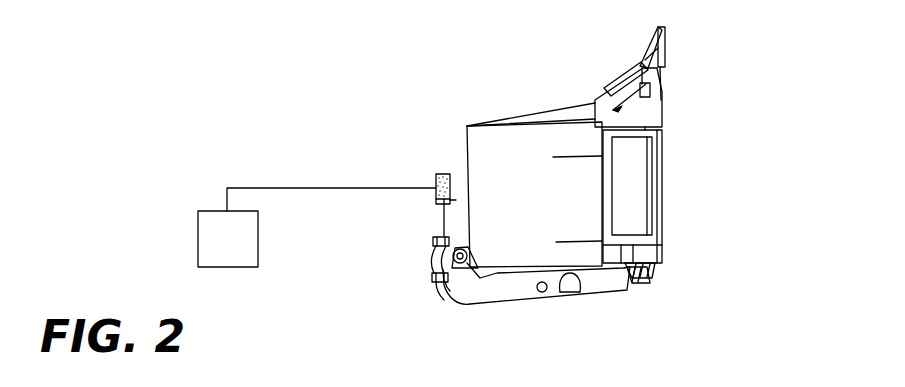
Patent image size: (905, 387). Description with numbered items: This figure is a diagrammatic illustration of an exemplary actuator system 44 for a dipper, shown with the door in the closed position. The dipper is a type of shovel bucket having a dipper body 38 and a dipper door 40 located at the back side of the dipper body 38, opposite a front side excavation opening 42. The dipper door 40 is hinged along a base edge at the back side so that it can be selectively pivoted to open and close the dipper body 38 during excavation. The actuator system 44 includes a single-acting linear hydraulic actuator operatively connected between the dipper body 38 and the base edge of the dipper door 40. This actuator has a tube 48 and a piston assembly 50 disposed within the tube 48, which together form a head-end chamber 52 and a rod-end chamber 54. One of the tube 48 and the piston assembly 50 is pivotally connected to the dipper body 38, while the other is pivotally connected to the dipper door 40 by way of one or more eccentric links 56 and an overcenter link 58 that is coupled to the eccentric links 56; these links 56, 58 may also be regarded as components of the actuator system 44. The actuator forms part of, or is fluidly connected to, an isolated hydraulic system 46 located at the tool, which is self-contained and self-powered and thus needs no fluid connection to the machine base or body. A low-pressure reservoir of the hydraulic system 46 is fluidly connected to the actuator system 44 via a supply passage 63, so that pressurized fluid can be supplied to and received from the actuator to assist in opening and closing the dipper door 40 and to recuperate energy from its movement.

The dipper body 38 is at (522, 221).
The dipper door 40 is at (599, 269).
The front side excavation opening 42 is at (583, 112).
The actuator system 44 is at (431, 149).
The hydraulic system 46 is at (237, 249).
The tube 48 is at (452, 199).
The piston assembly 50 is at (441, 215).
The head-end chamber 52 is at (436, 180).
The rod-end chamber 54 is at (456, 200).
The eccentric link 56 is at (432, 275).
The overcenter link 58 is at (488, 301).
The supply passage 63 is at (259, 188).